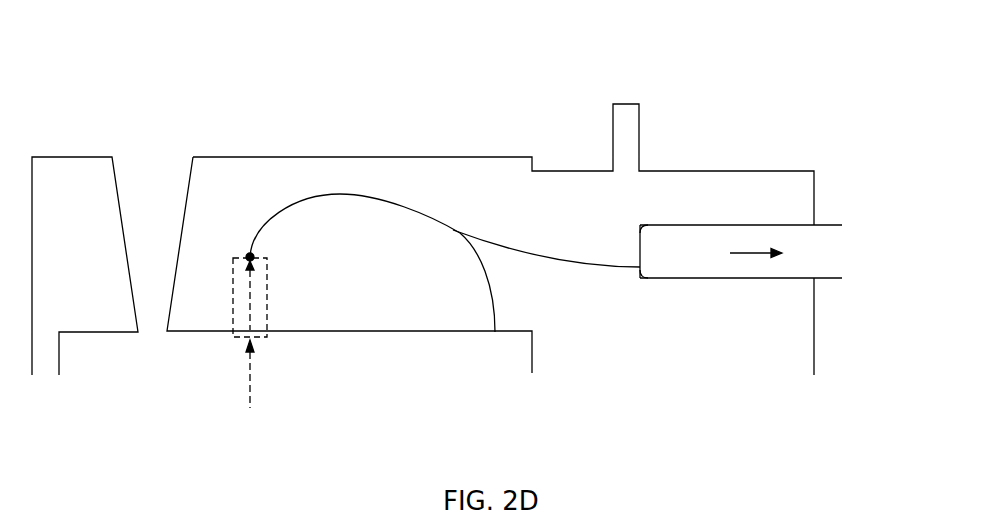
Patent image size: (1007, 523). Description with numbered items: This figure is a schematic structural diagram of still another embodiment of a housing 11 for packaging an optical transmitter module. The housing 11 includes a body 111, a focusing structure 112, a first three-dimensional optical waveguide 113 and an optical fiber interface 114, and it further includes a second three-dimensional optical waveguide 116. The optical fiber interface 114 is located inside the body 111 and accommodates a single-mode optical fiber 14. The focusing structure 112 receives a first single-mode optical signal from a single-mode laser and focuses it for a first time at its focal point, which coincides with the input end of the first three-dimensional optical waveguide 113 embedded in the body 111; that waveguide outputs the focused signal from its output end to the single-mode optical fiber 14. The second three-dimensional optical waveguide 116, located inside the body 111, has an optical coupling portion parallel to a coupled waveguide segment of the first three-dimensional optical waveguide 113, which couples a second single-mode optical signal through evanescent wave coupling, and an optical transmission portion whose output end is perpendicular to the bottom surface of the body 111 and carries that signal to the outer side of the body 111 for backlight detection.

The housing 11 is at (203, 157).
The body 111 is at (263, 157).
The focusing structure 112 is at (267, 288).
The first 3D optical waveguide 113 is at (370, 195).
The optical fiber interface 114 is at (641, 225).
The second 3D optical waveguide 116 is at (493, 287).
The single-mode optical fiber 14 is at (693, 253).